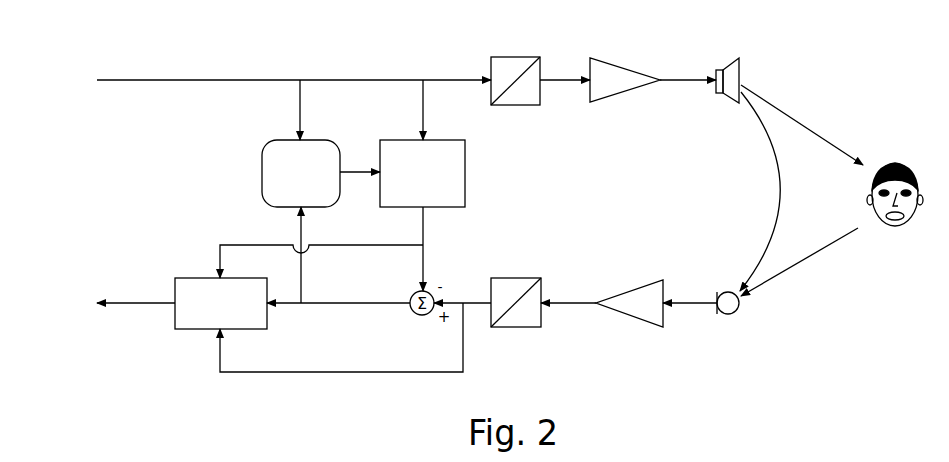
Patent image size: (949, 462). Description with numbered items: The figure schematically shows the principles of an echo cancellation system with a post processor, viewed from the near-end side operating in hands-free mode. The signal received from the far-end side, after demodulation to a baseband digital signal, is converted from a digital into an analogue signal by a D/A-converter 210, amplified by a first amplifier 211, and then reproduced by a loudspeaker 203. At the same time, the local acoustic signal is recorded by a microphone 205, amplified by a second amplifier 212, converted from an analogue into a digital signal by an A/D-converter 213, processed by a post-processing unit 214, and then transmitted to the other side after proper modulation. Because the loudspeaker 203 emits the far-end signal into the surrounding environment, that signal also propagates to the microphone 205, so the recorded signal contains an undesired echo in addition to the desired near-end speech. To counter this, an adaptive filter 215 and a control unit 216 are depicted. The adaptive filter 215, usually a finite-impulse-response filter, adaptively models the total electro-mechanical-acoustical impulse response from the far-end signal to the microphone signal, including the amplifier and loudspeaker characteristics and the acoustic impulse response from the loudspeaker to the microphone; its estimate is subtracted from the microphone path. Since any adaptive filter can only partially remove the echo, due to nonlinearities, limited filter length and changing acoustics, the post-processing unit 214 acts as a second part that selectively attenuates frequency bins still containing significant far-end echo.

The loudspeaker 203 is at (738, 60).
The microphone 205 is at (727, 314).
The D/A-converter 210 is at (527, 57).
The first amplifier 211 is at (624, 66).
The second amplifier 212 is at (630, 316).
The A/D-converter 213 is at (525, 327).
The post-processing unit 214 is at (190, 278).
The adaptive filter 215 is at (465, 172).
The control unit 216 is at (262, 148).